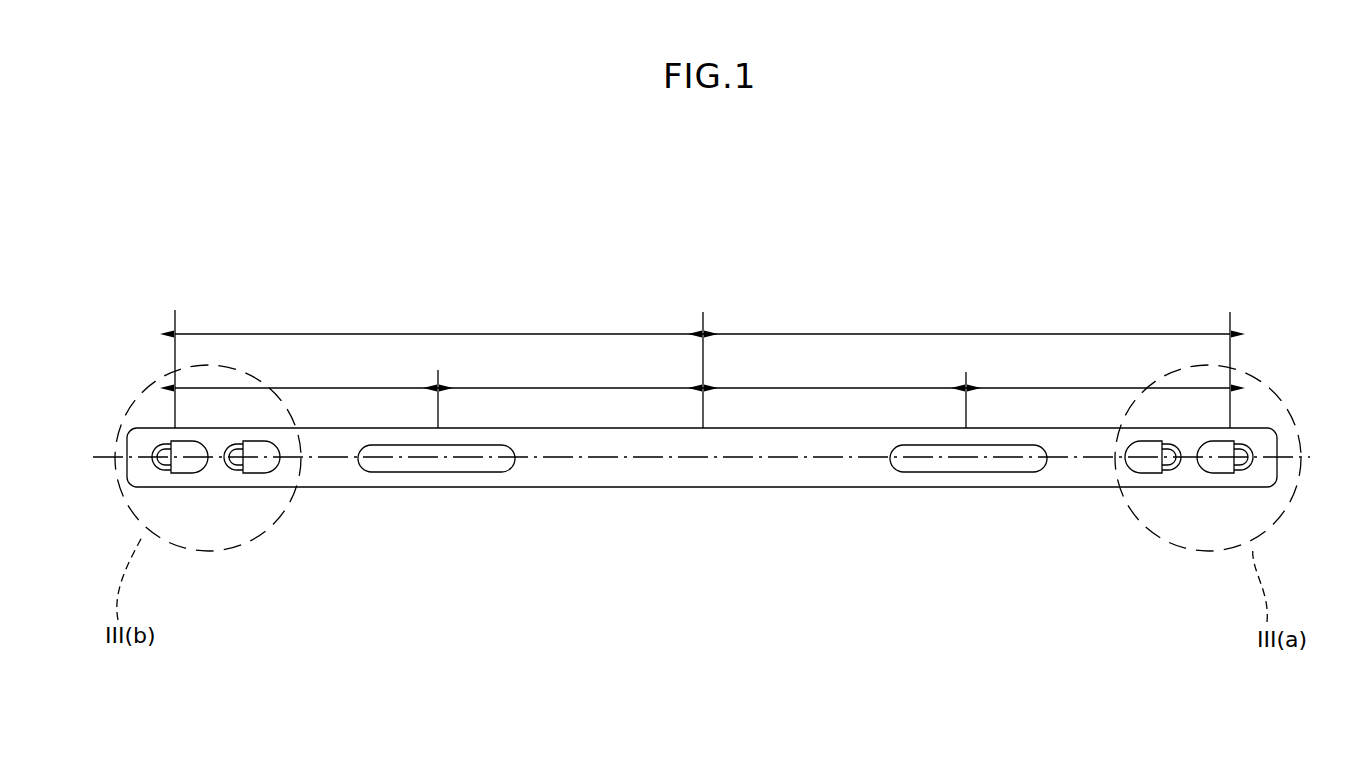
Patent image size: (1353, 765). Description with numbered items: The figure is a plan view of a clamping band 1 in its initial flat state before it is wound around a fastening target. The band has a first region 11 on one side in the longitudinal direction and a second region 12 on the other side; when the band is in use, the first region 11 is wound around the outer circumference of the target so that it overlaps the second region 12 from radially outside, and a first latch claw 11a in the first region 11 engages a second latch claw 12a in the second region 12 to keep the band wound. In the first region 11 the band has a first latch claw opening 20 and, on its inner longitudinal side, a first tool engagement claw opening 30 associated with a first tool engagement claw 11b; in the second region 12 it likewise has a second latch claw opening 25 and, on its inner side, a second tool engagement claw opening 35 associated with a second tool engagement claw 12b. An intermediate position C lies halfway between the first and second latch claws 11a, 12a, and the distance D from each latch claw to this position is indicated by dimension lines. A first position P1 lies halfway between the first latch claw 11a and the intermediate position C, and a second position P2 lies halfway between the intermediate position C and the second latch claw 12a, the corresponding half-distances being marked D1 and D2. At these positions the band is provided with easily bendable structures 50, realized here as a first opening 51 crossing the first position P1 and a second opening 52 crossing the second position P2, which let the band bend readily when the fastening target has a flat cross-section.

The clamping band 1 is at (1147, 263).
The first region 11 is at (1187, 498).
The first latch claw 11a is at (1247, 447).
The first tool engagement claw 11b is at (1172, 440).
The second region 12 is at (230, 498).
The second latch claw 12a is at (163, 440).
The second tool engagement claw 12b is at (233, 440).
The first latch claw opening 20 is at (1218, 470).
The first tool engagement claw opening 30 is at (1147, 470).
The second latch claw opening 25 is at (192, 470).
The second tool engagement claw opening 35 is at (265, 470).
The easily bendable structures 50 is at (702, 513).
The first opening 51 is at (964, 476).
The second opening 52 is at (436, 476).
The intermediate position C is at (708, 423).
The first position P1 is at (445, 423).
The second position P2 is at (972, 425).
The distance D is at (702, 311).
The distance D1 is at (439, 373).
The distance D2 is at (966, 374).